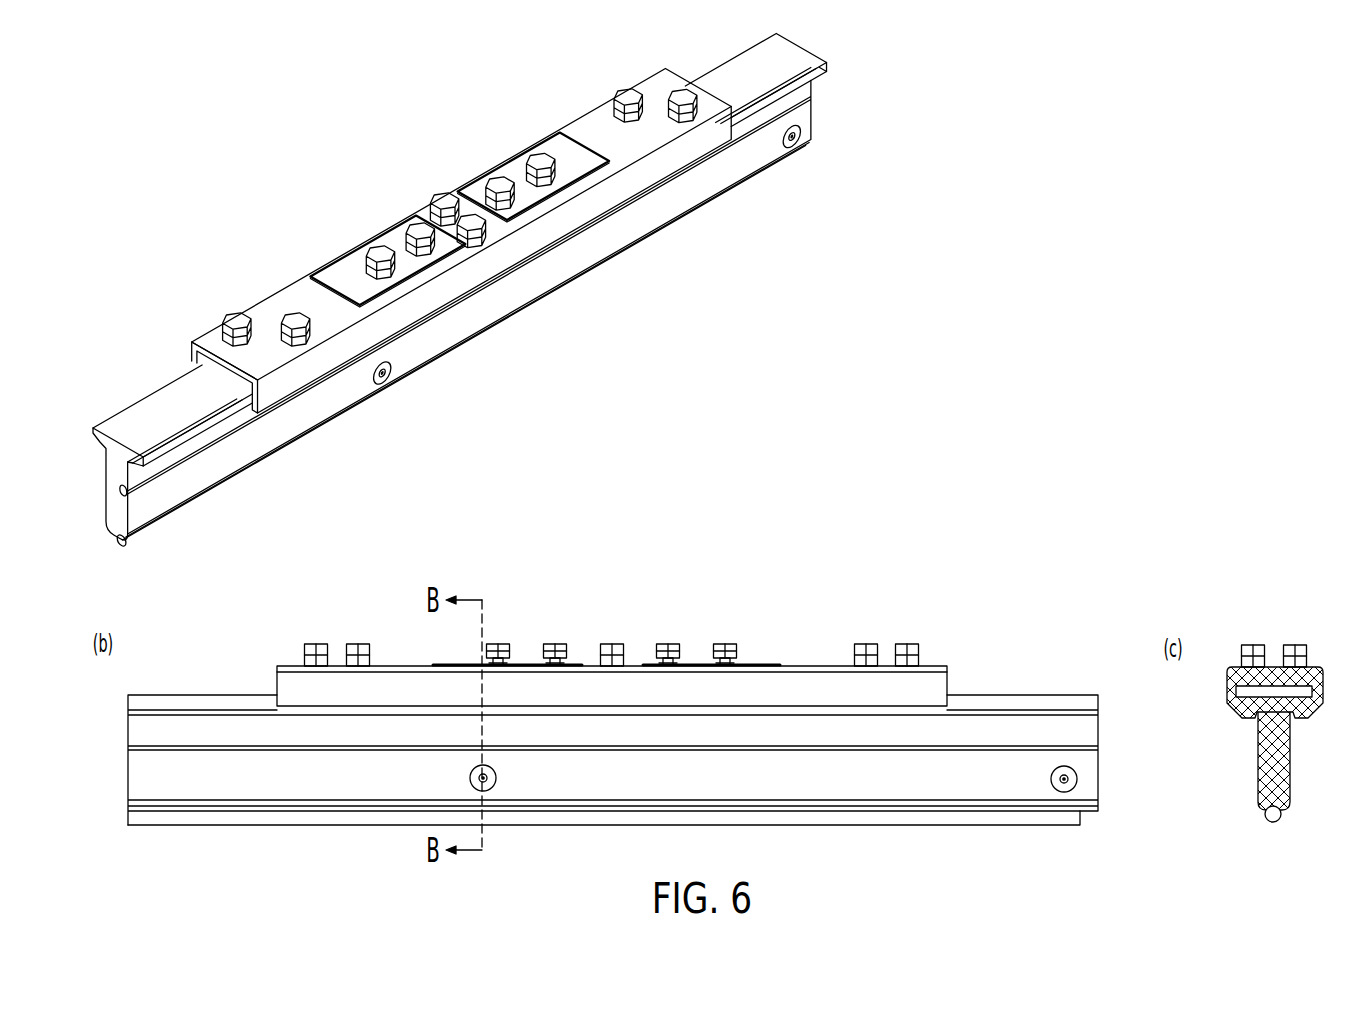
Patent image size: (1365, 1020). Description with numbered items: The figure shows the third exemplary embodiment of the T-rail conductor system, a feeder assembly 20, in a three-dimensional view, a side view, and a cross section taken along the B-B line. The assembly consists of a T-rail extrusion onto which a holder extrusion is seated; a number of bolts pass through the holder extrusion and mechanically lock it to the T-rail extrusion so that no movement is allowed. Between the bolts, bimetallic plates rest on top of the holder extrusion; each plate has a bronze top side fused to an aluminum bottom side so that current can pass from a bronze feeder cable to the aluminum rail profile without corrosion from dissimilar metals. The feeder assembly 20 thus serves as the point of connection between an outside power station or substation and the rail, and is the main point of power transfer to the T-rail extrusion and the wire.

The feeder assembly 20 is at (471, 101).